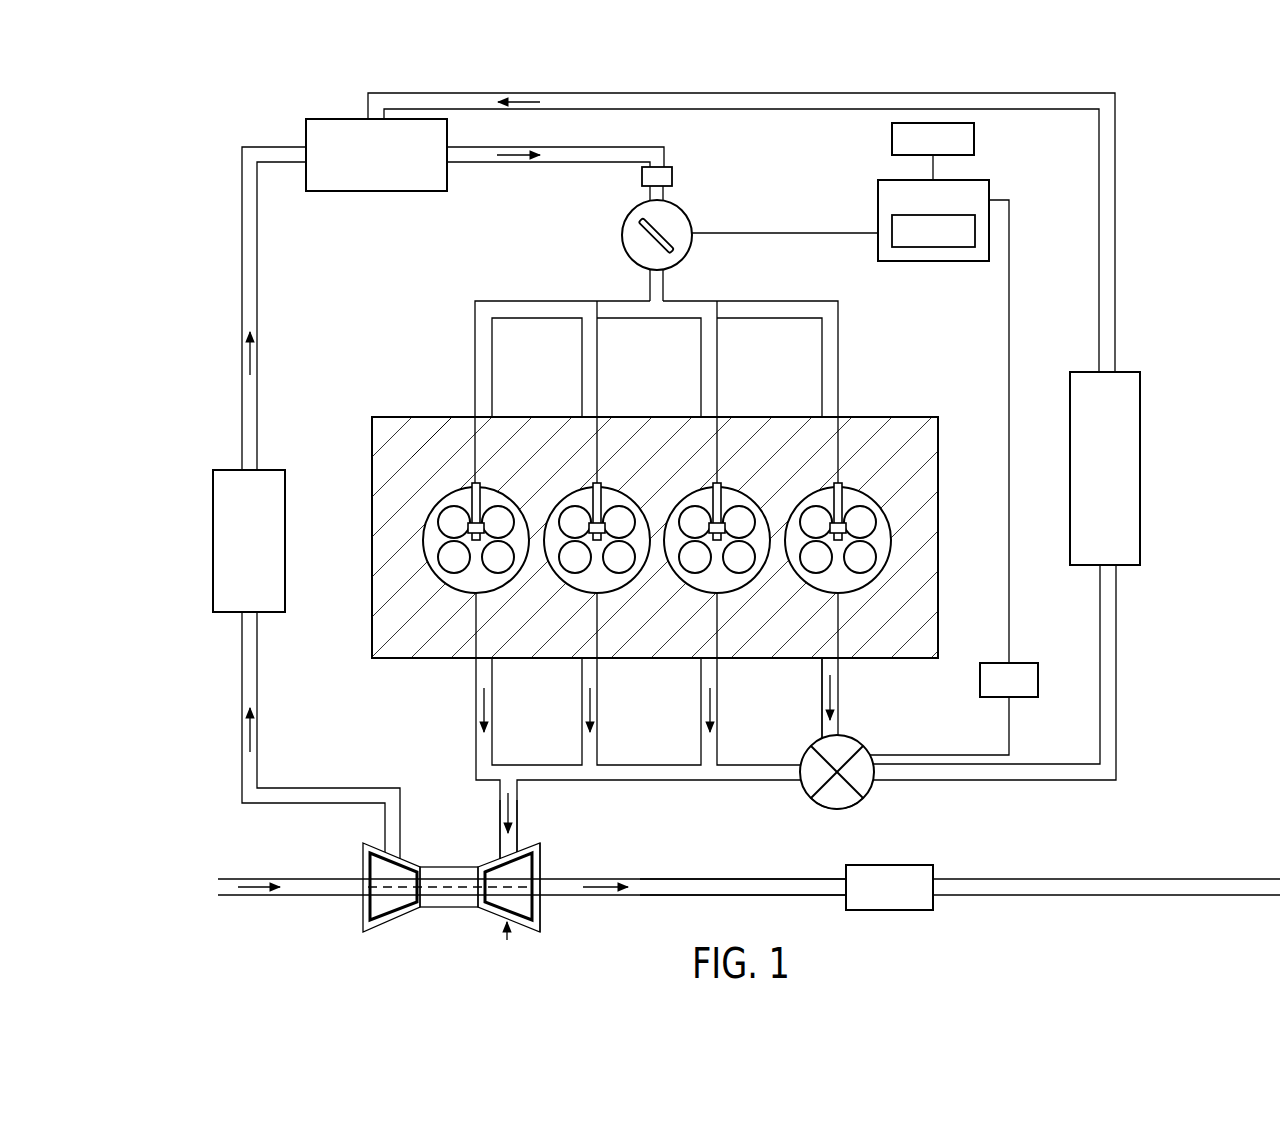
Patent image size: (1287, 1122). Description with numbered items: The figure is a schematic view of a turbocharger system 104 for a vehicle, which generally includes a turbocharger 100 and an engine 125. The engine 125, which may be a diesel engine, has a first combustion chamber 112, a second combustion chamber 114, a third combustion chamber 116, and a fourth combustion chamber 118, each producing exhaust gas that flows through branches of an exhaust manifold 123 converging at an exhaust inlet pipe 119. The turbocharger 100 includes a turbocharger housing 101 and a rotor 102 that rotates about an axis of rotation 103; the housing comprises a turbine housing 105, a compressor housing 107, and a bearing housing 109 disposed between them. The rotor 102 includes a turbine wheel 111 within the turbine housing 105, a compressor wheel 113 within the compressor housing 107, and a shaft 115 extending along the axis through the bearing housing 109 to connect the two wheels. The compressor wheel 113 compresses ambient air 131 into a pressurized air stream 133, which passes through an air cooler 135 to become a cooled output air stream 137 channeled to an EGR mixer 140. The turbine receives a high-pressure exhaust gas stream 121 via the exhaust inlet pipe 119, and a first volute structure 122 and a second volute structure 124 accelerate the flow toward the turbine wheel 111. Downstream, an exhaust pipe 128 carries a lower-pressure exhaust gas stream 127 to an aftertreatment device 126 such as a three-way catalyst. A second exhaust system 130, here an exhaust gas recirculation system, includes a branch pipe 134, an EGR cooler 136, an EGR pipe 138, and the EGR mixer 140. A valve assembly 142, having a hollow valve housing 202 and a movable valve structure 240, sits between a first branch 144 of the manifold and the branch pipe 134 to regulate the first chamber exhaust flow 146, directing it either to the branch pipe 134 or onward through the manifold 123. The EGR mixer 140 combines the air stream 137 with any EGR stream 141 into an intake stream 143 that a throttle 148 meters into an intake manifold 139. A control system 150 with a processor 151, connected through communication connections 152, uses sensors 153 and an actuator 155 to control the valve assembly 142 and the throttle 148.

The turbocharger 100 is at (362, 938).
The turbocharger housing 101 is at (507, 940).
The rotor 102 is at (432, 896).
The axis of rotation 103 is at (436, 886).
The turbocharger system 104 is at (98, 203).
The turbine housing 105 is at (540, 872).
The compressor housing 107 is at (363, 852).
The bearing housing 109 is at (467, 863).
The turbine wheel 111 is at (524, 912).
The first combustion chamber 112 is at (864, 496).
The compressor wheel 113 is at (373, 905).
The second combustion chamber 114 is at (712, 580).
The shaft 115 is at (457, 890).
The third combustion chamber 116 is at (588, 572).
The fourth combustion chamber 118 is at (462, 580).
The exhaust inlet pipe 119 is at (517, 838).
The exhaust gas stream 121 is at (517, 808).
The first volute structure 122 is at (538, 934).
The exhaust manifold 123 is at (440, 714).
The second volute structure 124 is at (482, 910).
The engine 125 is at (928, 400).
The aftertreatment device 126 is at (917, 864).
The exhaust gas stream 127 is at (606, 892).
The exhaust pipe 128 is at (703, 878).
The second exhaust system 130 is at (1180, 676).
The ambient air 131 is at (253, 892).
The pressurized air stream 133 is at (242, 735).
The branch pipe 134 is at (1052, 763).
The air cooler 135 is at (213, 538).
The EGR cooler 136 is at (1140, 470).
The output air stream 137 is at (242, 362).
The EGR pipe 138 is at (1115, 93).
The intake manifold 139 is at (767, 286).
The EGR mixer 140 is at (306, 128).
The EGR stream 141 is at (530, 98).
The valve assembly 142 is at (873, 745).
The intake stream 143 is at (510, 158).
The first branch 144 is at (838, 704).
The first chamber exhaust flow 146 is at (822, 690).
The throttle 148 is at (622, 222).
The control system 150 is at (989, 186).
The processor 151 is at (892, 232).
The communication connection 152 is at (703, 233).
The sensor 153 is at (974, 140).
The actuator 155 is at (1028, 663).
The valve housing 202 is at (873, 783).
The valve structure 240 is at (852, 800).